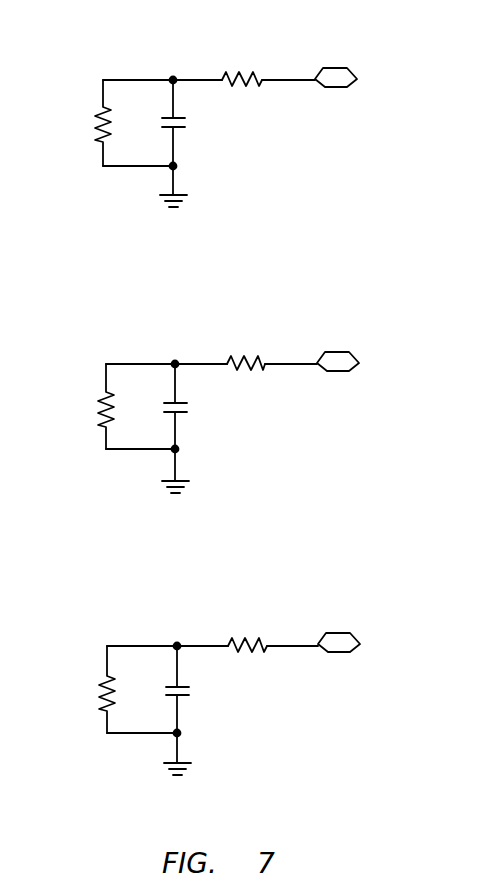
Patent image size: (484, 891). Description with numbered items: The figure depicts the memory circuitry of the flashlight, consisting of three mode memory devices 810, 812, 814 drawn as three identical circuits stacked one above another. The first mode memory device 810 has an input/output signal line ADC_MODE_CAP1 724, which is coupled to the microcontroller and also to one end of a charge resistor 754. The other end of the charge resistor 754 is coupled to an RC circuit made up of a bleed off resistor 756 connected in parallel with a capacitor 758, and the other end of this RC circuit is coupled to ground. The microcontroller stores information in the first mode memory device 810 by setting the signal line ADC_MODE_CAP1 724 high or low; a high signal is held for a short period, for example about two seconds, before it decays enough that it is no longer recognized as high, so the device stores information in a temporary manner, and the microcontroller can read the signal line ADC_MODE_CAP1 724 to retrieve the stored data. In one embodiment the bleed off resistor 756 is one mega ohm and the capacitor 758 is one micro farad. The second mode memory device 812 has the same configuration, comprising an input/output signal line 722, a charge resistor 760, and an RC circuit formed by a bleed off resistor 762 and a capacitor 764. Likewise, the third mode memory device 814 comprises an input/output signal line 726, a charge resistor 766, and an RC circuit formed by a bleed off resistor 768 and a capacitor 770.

The charge resistor 754 is at (247, 70).
The bleed off resistor 756 is at (95, 124).
The capacitor 758 is at (185, 124).
The input/output signal line ADC_MODE_CAP1 724 is at (339, 87).
The first mode memory device 810 is at (217, 114).
The charge resistor 760 is at (250, 354).
The bleed off resistor 762 is at (98, 408).
The capacitor 764 is at (187, 408).
The input/output signal line 722 is at (341, 371).
The mode memory device 812 is at (219, 399).
The charge resistor 766 is at (252, 636).
The bleed off resistor 768 is at (100, 691).
The capacitor 770 is at (189, 691).
The input/output signal line 726 is at (343, 652).
The mode memory device 814 is at (221, 695).